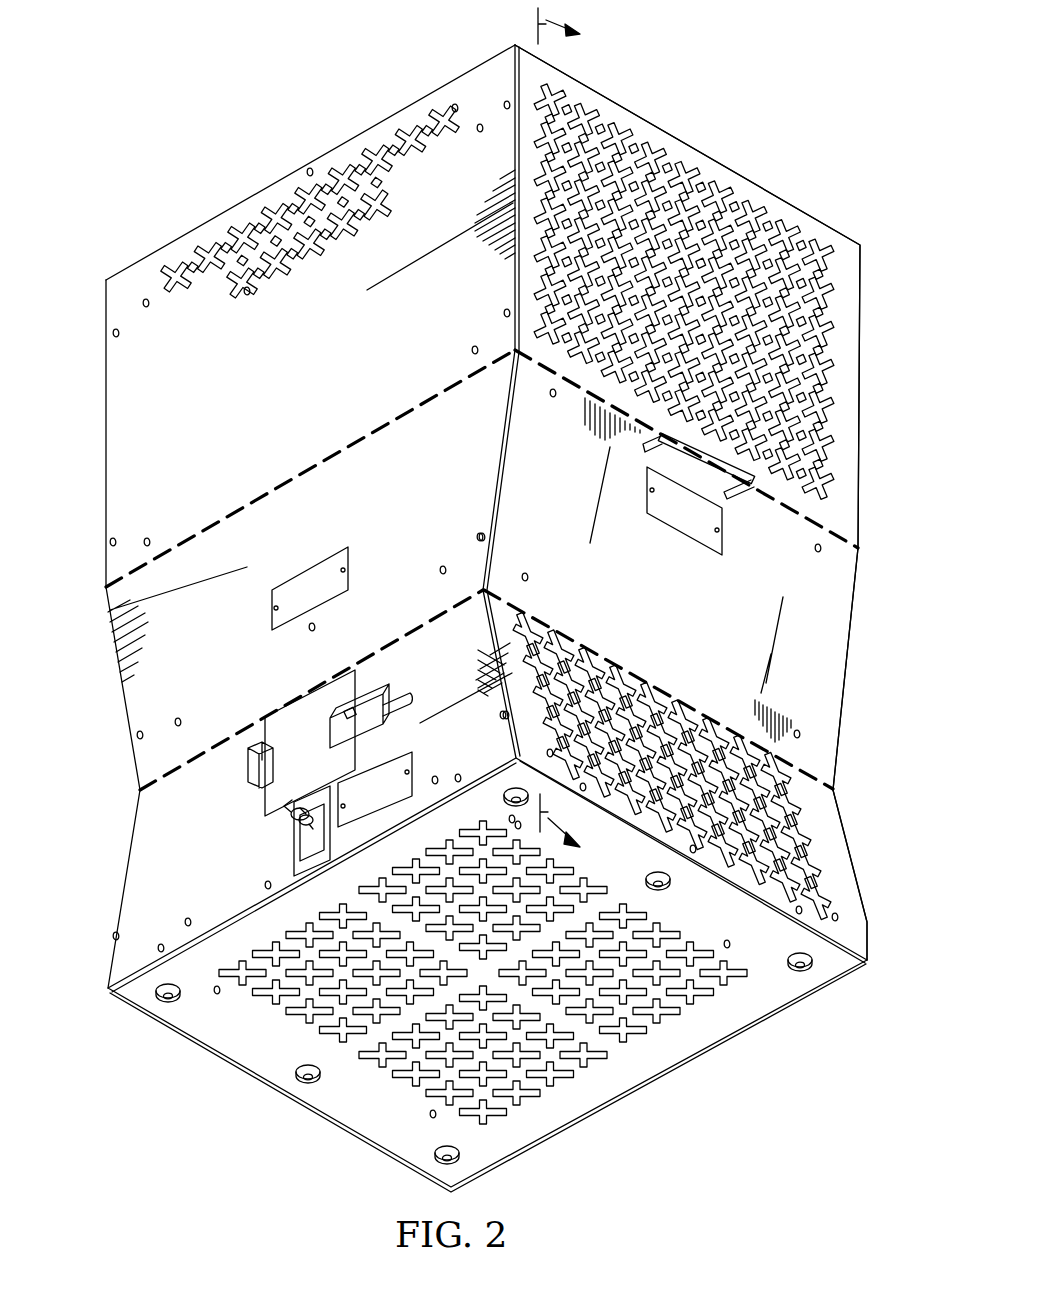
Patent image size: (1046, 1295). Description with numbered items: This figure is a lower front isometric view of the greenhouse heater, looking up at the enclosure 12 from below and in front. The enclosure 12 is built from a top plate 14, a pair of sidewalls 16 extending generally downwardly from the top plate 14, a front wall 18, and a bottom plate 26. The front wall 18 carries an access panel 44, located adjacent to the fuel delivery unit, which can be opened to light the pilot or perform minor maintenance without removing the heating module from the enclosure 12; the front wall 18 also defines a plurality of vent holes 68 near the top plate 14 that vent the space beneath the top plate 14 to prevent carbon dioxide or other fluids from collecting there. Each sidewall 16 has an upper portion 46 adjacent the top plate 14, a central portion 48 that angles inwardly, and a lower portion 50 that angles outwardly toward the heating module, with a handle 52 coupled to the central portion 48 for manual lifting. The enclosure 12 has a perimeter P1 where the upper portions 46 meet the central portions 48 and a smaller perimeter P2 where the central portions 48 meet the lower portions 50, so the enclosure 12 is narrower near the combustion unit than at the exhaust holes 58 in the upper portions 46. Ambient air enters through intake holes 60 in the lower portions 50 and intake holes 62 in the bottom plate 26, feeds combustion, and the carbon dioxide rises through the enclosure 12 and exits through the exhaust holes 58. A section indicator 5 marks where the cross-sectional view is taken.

The enclosure 12 is at (888, 303).
The top plate 14 is at (311, 163).
The sidewalls 16 is at (718, 502).
The front wall 18 is at (281, 516).
The bottom plate 26 is at (795, 985).
The access panel 44 is at (308, 700).
The upper portion 46 is at (715, 296).
The central portion 48 is at (688, 609).
The lower portion 50 is at (693, 786).
The handles 52 is at (753, 492).
The exhaust holes 58 is at (843, 342).
The intake holes 60 is at (818, 800).
The intake holes 62 is at (700, 1018).
The vent holes 68 is at (203, 248).
The perimeter P1 is at (302, 476).
The perimeter P2 is at (242, 724).
The section line 5 is at (567, 440).